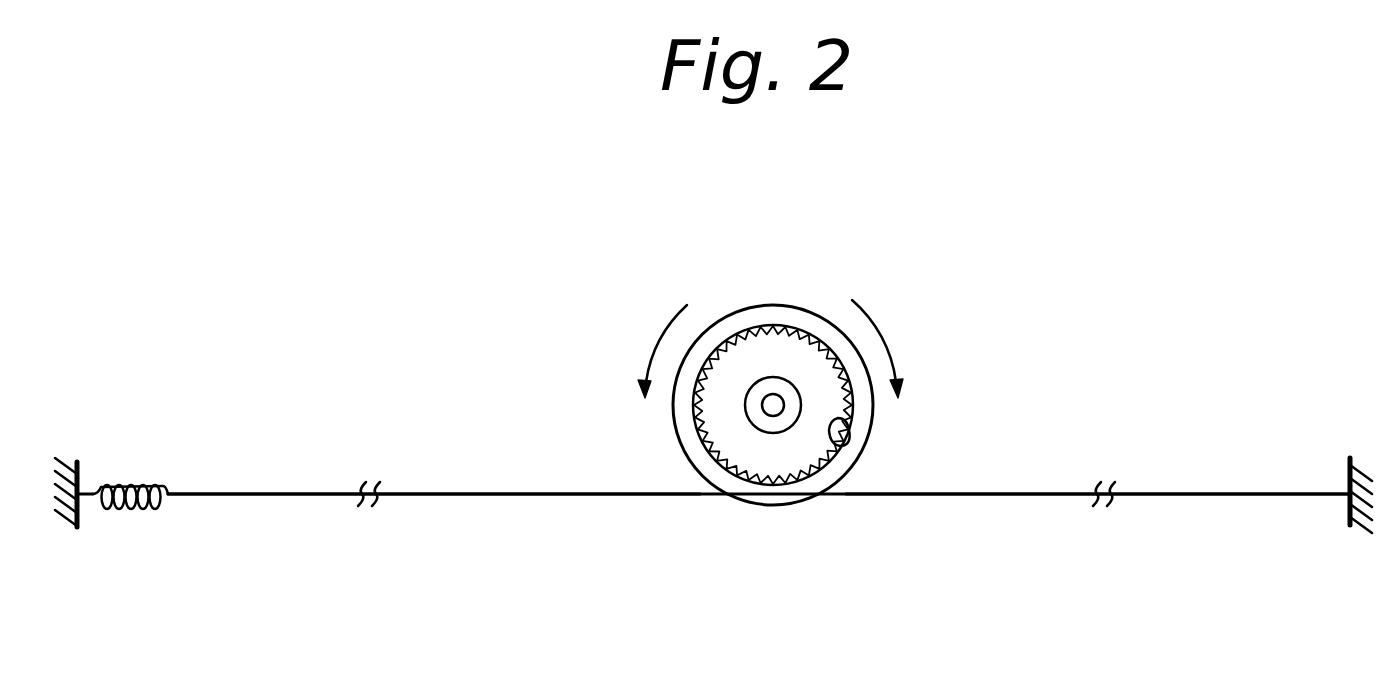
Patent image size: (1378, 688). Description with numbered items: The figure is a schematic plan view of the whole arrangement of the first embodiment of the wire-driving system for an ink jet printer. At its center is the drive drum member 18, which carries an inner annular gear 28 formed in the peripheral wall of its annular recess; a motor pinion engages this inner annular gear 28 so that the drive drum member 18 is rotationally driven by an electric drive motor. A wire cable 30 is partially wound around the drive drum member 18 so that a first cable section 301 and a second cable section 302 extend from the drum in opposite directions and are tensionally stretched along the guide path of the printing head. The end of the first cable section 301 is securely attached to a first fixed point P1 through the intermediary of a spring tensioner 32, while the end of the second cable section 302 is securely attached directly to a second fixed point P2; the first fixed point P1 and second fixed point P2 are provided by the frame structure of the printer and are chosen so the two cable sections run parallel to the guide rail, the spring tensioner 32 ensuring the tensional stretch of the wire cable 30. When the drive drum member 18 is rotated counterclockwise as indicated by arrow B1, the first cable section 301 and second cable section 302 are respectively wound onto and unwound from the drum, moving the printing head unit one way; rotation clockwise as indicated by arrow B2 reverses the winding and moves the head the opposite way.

The drive drum member 18 is at (768, 306).
The inner annular gear 28 is at (838, 428).
The wire cable 30 is at (631, 497).
The first cable section 301 is at (436, 494).
The second cable section 302 is at (1048, 493).
The spring tensioner 32 is at (128, 512).
The first fixed point P1 is at (78, 490).
The second fixed point P2 is at (1349, 482).
The arrow B1 is at (659, 344).
The arrow B2 is at (884, 335).